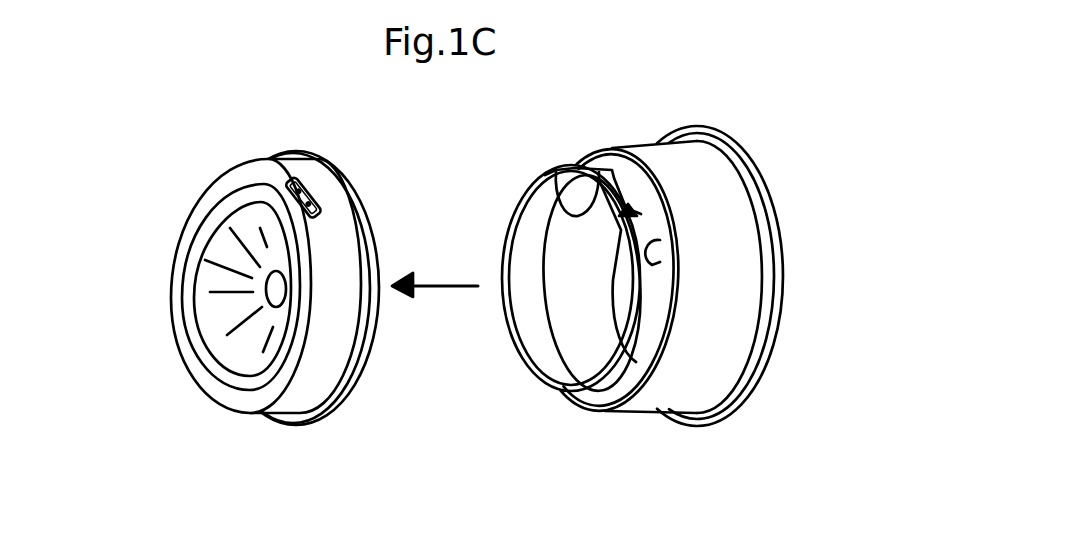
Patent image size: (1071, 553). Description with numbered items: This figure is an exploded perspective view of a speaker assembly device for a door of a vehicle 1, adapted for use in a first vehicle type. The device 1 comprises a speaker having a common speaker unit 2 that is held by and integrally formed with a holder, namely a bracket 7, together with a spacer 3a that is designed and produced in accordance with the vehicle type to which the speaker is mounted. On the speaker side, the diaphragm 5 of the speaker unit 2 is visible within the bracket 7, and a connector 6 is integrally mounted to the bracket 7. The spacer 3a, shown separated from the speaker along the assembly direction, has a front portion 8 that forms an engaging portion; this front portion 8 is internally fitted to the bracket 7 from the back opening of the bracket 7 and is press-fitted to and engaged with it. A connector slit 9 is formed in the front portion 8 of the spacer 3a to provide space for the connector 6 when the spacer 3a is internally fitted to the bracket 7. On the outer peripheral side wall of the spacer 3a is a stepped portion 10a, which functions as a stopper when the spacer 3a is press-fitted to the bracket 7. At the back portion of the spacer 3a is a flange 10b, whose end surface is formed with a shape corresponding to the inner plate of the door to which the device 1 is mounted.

The speaker assembly device for a door of a vehicle 1 is at (284, 478).
The speaker unit 2 is at (215, 332).
The diaphragm 5 is at (221, 236).
The connector 6 is at (313, 192).
The bracket 7 is at (325, 370).
The front portion 8 is at (538, 345).
The connector slit 9 is at (560, 212).
The stepped portion 10a is at (665, 245).
The flange 10b is at (789, 268).
The spacer 3a is at (611, 441).